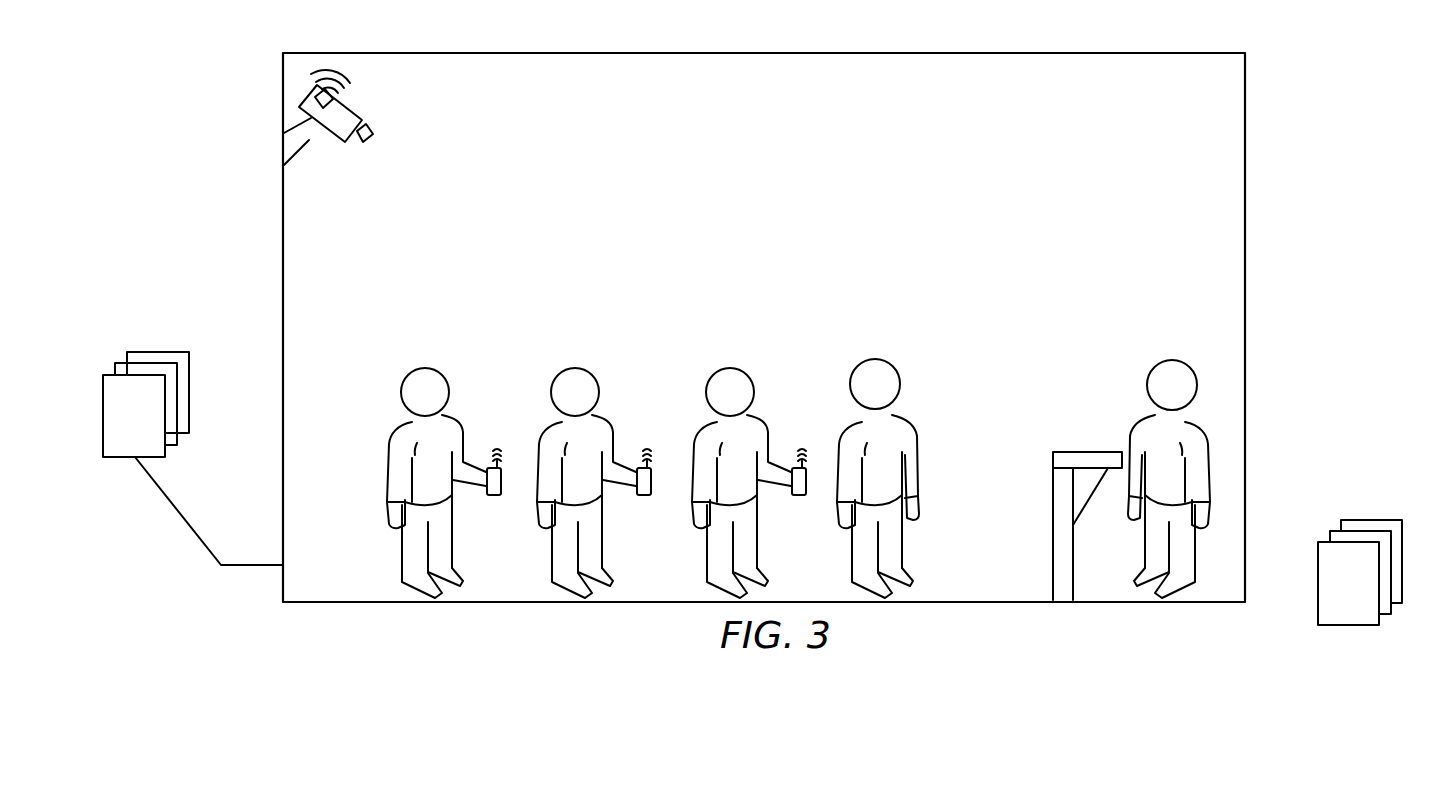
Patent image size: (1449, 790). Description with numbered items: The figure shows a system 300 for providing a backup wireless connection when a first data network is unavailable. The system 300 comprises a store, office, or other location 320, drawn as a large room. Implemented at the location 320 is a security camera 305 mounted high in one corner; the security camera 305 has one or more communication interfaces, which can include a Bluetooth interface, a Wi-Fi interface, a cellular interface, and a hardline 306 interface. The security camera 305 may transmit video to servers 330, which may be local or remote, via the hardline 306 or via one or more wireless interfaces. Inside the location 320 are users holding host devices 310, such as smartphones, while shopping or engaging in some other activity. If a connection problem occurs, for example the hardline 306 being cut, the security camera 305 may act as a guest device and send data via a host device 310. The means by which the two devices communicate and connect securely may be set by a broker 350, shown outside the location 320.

The system 300 is at (1063, 23).
The security camera 305 is at (358, 118).
The hardline 306 is at (307, 143).
The host device 310 is at (494, 496).
The location 320 is at (1246, 208).
The servers 330 is at (160, 352).
The broker 350 is at (1370, 520).